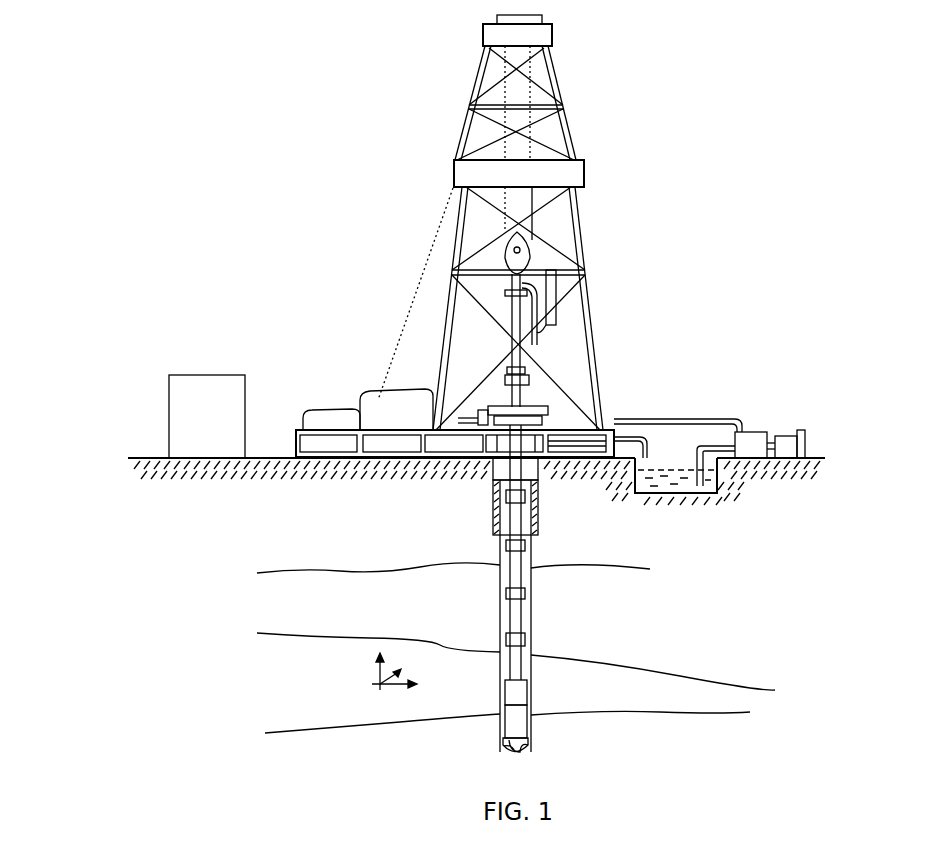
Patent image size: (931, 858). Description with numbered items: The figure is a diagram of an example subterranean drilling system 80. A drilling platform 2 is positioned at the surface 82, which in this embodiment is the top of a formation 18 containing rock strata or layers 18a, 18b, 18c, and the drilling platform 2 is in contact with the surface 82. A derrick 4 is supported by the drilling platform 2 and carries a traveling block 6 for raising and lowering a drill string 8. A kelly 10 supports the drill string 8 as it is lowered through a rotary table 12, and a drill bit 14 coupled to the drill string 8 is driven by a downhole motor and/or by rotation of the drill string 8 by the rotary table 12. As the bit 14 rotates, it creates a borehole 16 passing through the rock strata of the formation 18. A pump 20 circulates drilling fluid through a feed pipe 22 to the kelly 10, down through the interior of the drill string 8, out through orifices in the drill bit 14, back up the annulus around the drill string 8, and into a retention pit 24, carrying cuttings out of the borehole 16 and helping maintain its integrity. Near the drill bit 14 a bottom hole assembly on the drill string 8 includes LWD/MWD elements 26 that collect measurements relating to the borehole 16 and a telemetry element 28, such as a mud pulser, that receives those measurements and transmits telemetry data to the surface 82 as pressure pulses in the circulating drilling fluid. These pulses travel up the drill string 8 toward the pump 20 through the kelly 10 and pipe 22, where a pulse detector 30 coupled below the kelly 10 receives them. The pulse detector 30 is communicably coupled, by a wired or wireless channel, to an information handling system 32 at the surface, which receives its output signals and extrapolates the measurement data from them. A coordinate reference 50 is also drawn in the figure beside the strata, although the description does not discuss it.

The drilling platform 2 is at (292, 438).
The derrick 4 is at (566, 125).
The traveling block 6 is at (535, 240).
The drill string 8 is at (520, 558).
The kelly 10 is at (545, 290).
The rotary table 12 is at (540, 395).
The drill bit 14 is at (530, 748).
The borehole 16 is at (532, 578).
The formation 18 is at (453, 534).
The rock stratum 18a is at (258, 676).
The rock stratum 18b is at (516, 637).
The rock stratum 18c is at (672, 550).
The pump 20 is at (750, 432).
The feed pipe 22 is at (668, 419).
The retention pit 24 is at (680, 478).
The LWD/MWD elements 26 is at (510, 708).
The telemetry element 28 is at (522, 692).
The pulse detector 30 is at (523, 343).
The information handling system 32 is at (190, 426).
The coordinate system 50 is at (370, 678).
The subterranean drilling system 80 is at (678, 188).
The surface 82 is at (148, 458).